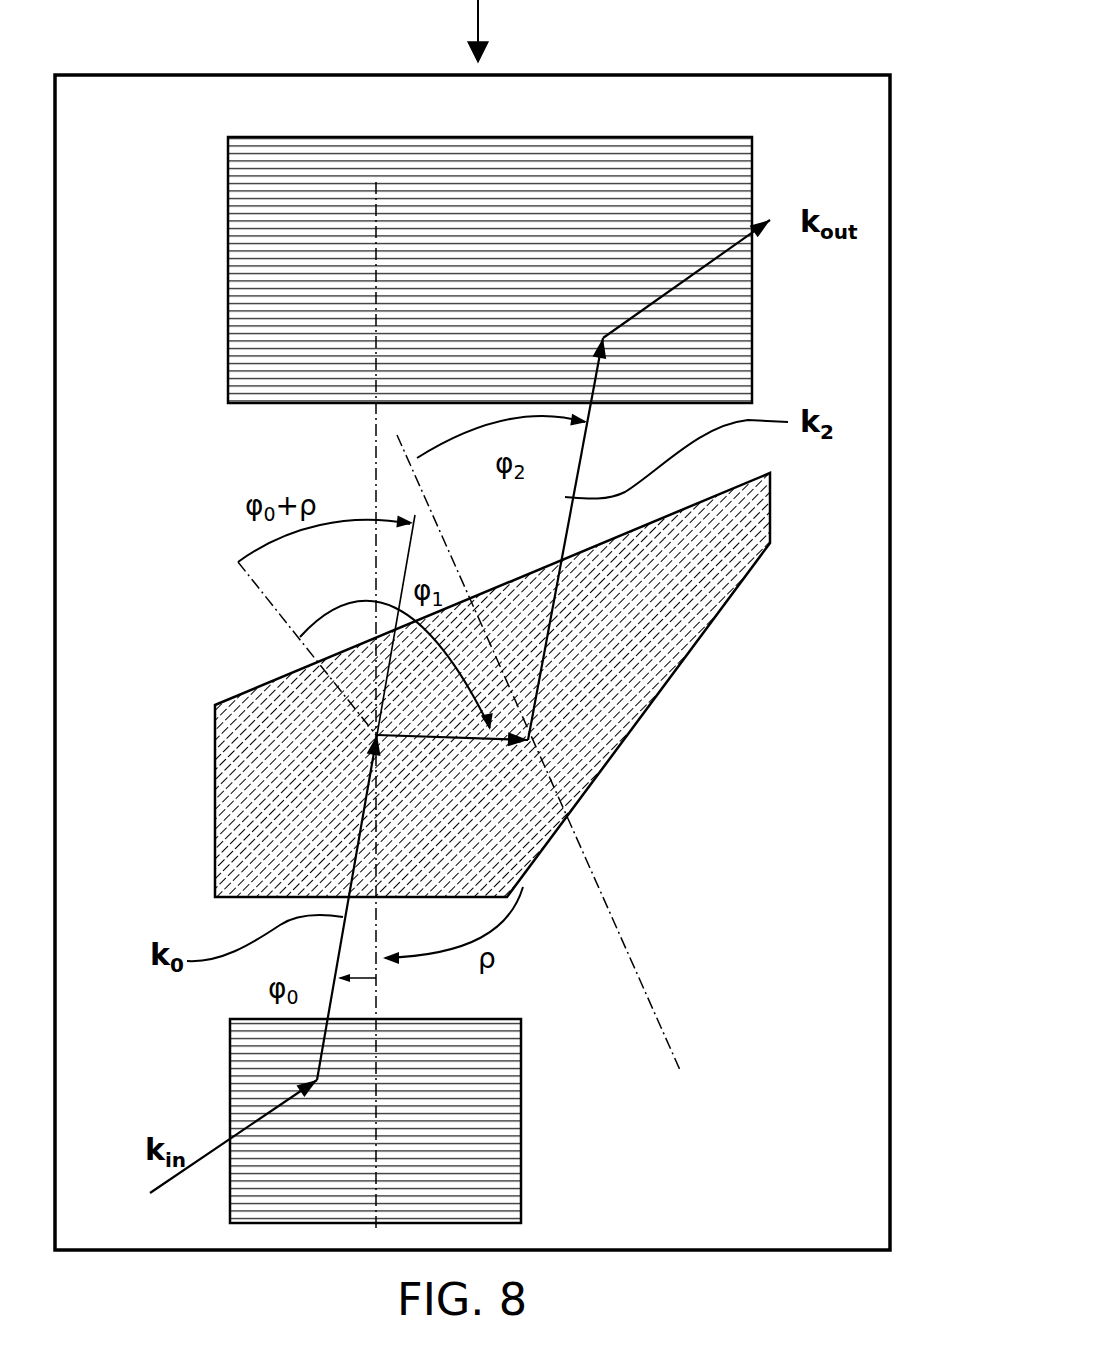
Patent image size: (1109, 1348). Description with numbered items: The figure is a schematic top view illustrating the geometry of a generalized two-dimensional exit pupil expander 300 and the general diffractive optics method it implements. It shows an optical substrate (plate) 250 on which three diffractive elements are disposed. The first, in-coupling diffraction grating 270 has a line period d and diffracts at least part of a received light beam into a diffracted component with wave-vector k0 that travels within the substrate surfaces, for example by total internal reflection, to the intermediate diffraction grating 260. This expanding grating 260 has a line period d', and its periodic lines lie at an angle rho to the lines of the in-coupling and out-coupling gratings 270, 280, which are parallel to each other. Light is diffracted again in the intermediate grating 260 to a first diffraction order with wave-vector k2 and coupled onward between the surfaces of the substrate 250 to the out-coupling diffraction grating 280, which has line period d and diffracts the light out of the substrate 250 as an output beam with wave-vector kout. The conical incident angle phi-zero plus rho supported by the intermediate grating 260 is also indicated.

The optical substrate (plate) 250 is at (617, 75).
The intermediate diffraction grating 260 is at (595, 772).
The in-coupling diffraction grating 270 is at (522, 1103).
The out-coupling diffraction grating 280 is at (228, 385).
The two-dimensional exit pupil expander 300 is at (521, 31).